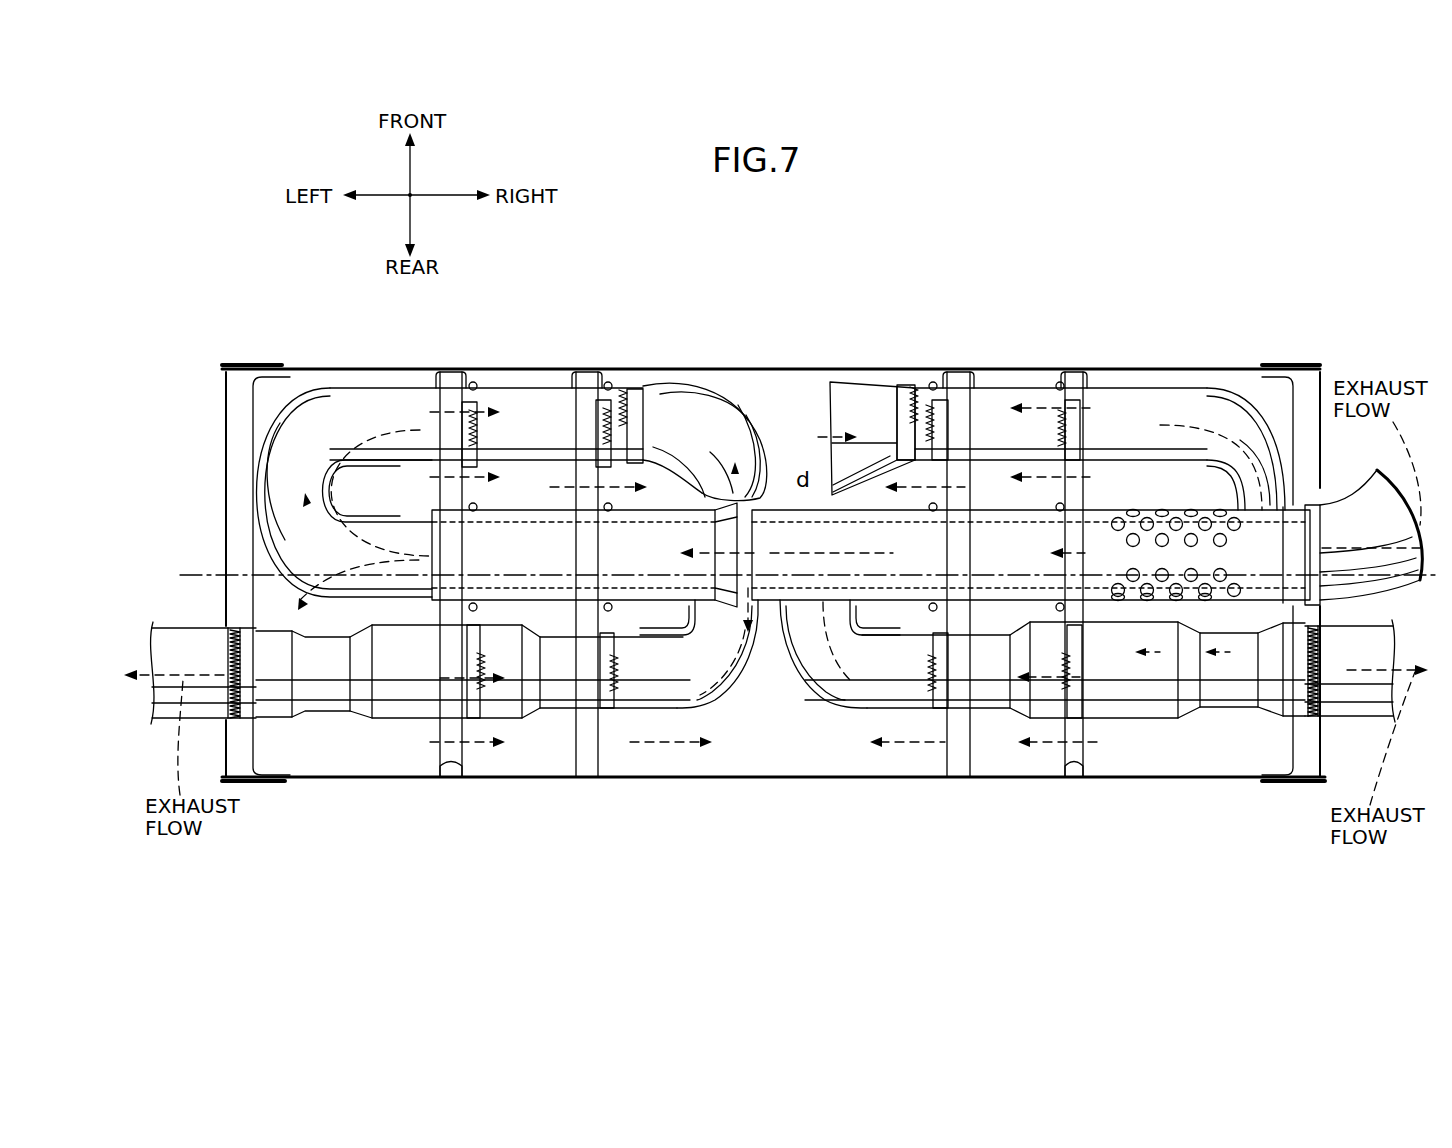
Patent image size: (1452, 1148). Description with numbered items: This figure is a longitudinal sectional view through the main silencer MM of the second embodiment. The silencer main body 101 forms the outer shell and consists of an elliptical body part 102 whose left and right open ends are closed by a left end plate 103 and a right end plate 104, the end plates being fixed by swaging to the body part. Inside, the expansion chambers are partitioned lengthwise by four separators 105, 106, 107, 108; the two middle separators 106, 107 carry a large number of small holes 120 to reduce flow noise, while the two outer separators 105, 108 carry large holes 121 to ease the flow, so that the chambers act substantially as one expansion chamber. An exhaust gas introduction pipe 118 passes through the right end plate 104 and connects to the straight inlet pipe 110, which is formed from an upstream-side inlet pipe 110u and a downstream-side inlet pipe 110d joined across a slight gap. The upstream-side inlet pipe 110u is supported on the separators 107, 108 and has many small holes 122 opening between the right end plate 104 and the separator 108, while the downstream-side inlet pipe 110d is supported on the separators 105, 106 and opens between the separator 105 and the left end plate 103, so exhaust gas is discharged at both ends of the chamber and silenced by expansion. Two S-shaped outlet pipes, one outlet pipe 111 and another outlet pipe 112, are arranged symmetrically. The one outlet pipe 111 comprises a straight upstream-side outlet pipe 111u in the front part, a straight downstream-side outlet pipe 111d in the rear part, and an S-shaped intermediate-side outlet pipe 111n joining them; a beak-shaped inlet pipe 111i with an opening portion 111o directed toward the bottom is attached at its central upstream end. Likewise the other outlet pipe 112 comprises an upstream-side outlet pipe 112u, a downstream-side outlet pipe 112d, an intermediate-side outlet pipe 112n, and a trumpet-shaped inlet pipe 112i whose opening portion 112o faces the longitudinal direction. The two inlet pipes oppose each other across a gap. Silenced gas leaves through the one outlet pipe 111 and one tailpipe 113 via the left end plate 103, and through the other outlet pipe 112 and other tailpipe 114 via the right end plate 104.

The main silencer MM is at (851, 288).
The silencer main body 101 is at (743, 364).
The body part 102 is at (364, 370).
The left end plate 103 is at (250, 437).
The right end plate 104 is at (1295, 392).
The separator 105 is at (474, 370).
The separator 106 is at (607, 372).
The separator 107 is at (933, 370).
The separator 108 is at (1075, 381).
The inlet pipe 110 is at (876, 654).
The downstream-side inlet pipe 110d is at (678, 588).
The upstream-side inlet pipe 110u is at (1036, 638).
The one outlet pipe 111 is at (454, 563).
The upstream-side outlet pipe 111u is at (533, 405).
The downstream-side outlet pipe 111d is at (557, 700).
The beak-shaped inlet pipe 111i is at (702, 408).
The opening portion 111o is at (707, 460).
The intermediate-side outlet pipe 111n is at (270, 492).
The other outlet pipe 112 is at (1081, 568).
The upstream-side outlet pipe 112u is at (1140, 405).
The downstream-side outlet pipe 112d is at (990, 692).
The trumpet-shaped inlet pipe 112i is at (853, 380).
The opening portion 112o is at (802, 372).
The intermediate-side outlet pipe 112n is at (1265, 447).
The one tailpipe 113 is at (204, 640).
The other tailpipe 114 is at (1352, 703).
The exhaust gas introduction pipe 118 is at (1362, 515).
The small holes 120 is at (603, 767).
The large holes 121 is at (446, 777).
The small holes 122 is at (1237, 567).